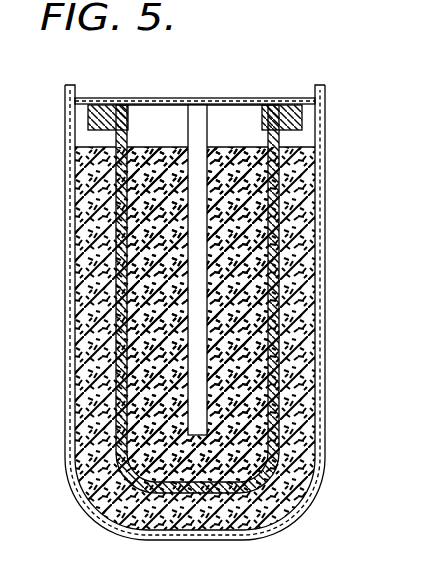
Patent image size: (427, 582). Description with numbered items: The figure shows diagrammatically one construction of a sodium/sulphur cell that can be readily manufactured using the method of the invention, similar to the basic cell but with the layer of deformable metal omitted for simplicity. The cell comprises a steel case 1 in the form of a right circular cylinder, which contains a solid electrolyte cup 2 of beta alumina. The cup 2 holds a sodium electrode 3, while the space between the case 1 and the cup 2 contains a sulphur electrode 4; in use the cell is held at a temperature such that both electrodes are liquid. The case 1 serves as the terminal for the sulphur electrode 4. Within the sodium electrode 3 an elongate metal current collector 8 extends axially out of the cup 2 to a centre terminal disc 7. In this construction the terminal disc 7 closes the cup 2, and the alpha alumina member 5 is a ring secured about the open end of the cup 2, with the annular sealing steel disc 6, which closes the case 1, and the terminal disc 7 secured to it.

The case 1 is at (66, 346).
The solid electrolyte cup 2 is at (118, 230).
The sodium electrode 3 is at (140, 283).
The sulphur electrode 4 is at (288, 222).
The alpha alumina member 5 is at (88, 118).
The annular sealing steel disc 6 is at (77, 94).
The terminal disc 7 is at (226, 98).
The current collector 8 is at (196, 347).